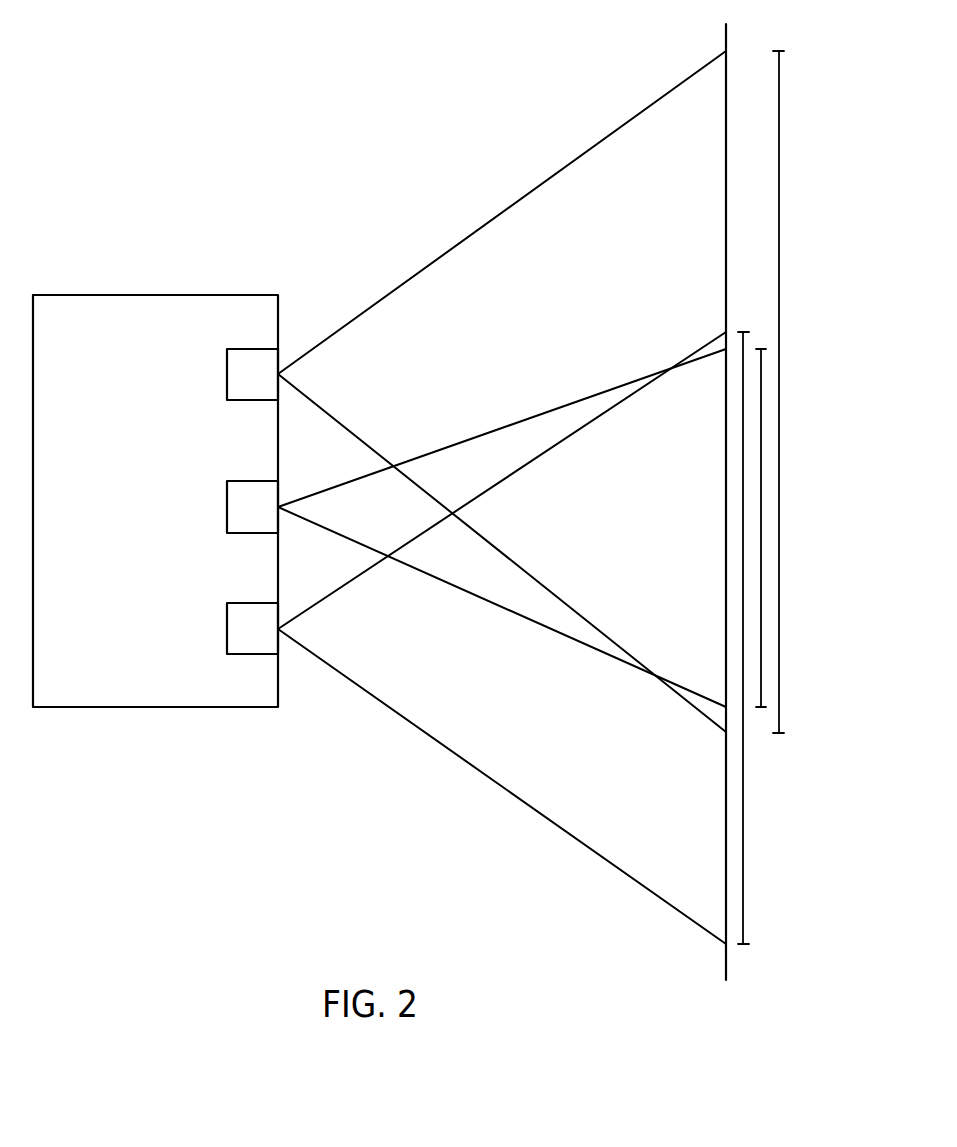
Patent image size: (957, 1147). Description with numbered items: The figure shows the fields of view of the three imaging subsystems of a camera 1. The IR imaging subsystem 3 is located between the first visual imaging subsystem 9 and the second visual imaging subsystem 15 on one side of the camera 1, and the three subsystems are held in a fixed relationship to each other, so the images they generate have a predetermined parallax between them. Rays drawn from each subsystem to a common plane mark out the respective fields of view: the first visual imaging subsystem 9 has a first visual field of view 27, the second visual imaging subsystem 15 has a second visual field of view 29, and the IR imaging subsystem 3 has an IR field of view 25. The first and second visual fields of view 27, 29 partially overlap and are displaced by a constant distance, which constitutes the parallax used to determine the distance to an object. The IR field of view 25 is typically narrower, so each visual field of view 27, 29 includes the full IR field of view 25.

The display device / projector housing 1 is at (73, 345).
The first visual imaging subsystem 9 is at (241, 387).
The IR imaging subsystem 3 is at (240, 520).
The second visual imaging subsystem 15 is at (235, 644).
The first visual field of view 27 is at (779, 541).
The IR field of view 25 is at (761, 656).
The second visual field of view 29 is at (744, 813).